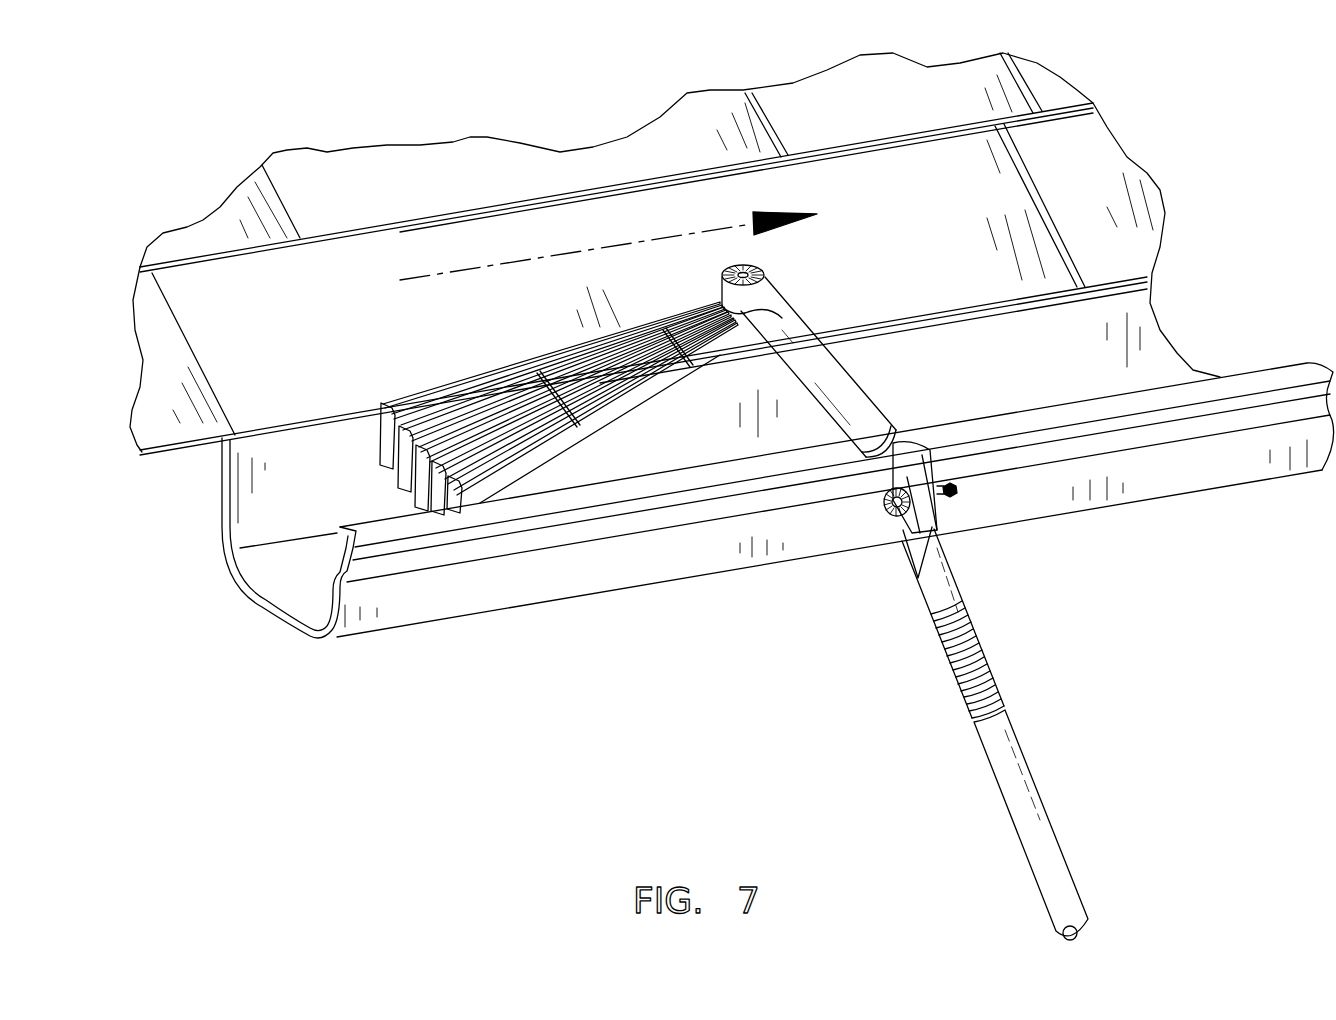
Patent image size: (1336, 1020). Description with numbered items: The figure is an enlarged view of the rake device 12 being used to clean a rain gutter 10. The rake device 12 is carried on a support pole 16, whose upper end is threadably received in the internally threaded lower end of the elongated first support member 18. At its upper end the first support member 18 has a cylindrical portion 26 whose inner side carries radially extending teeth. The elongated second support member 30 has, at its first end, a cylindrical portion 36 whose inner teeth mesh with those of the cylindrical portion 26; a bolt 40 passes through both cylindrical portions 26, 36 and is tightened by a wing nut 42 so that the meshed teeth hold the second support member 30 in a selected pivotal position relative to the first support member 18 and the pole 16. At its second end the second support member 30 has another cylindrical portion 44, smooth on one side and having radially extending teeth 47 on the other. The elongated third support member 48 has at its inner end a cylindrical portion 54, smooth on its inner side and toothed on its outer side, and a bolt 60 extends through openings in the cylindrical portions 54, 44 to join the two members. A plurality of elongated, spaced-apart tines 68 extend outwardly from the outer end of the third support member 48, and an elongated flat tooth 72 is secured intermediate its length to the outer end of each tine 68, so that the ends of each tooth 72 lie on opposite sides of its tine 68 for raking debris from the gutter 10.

The rain gutter 10 is at (1133, 373).
The rake device 12 is at (873, 307).
The support pole 16 is at (1047, 823).
The first support member 18 is at (962, 598).
The cylindrical portion 26 is at (920, 537).
The second support member 30 is at (850, 387).
The cylindrical portion 36 is at (930, 505).
The bolt 40 is at (887, 510).
The wing nut 42 is at (960, 497).
The cylindrical portion 44 is at (667, 328).
The radially extending teeth 47 is at (738, 266).
The third support member 48 is at (722, 340).
The cylindrical portion 54 is at (700, 335).
The bolt 60 is at (763, 270).
The tines 68 is at (483, 383).
The flat tooth 72 is at (335, 435).